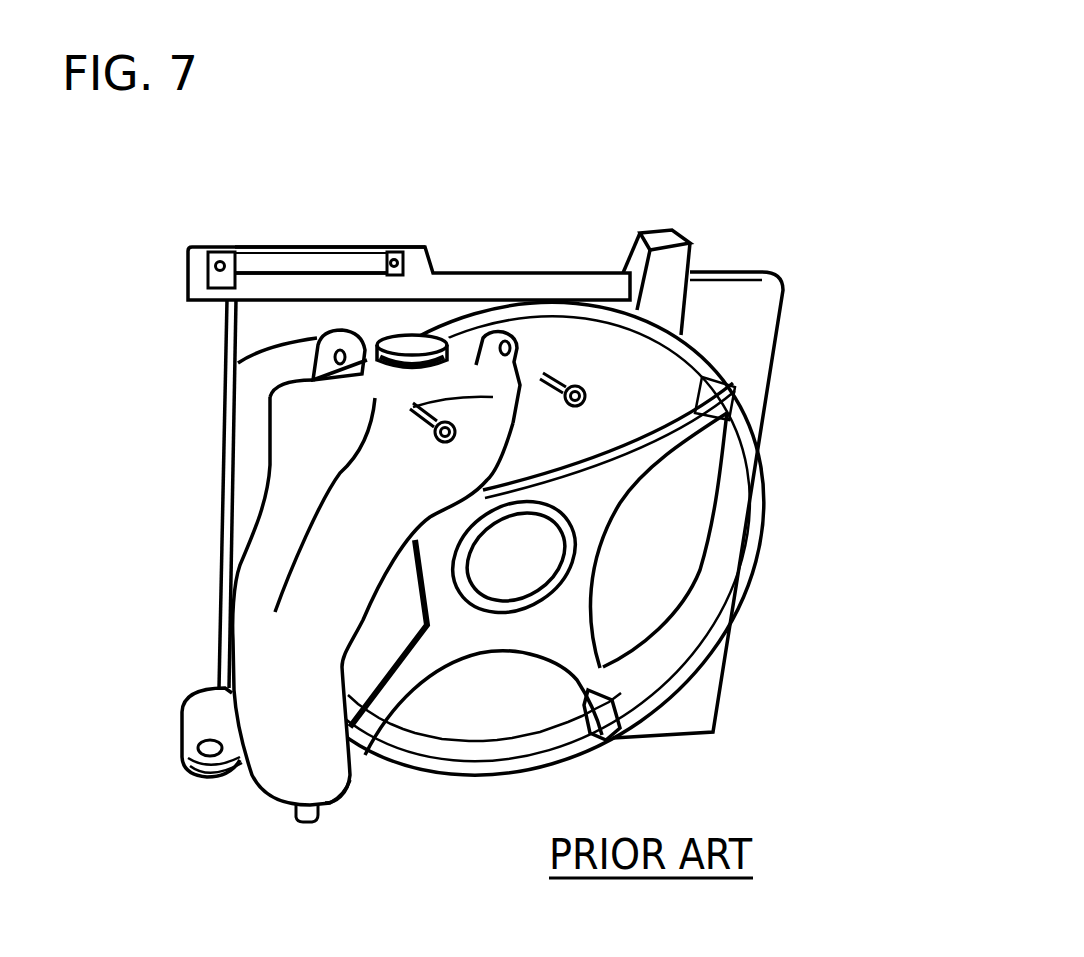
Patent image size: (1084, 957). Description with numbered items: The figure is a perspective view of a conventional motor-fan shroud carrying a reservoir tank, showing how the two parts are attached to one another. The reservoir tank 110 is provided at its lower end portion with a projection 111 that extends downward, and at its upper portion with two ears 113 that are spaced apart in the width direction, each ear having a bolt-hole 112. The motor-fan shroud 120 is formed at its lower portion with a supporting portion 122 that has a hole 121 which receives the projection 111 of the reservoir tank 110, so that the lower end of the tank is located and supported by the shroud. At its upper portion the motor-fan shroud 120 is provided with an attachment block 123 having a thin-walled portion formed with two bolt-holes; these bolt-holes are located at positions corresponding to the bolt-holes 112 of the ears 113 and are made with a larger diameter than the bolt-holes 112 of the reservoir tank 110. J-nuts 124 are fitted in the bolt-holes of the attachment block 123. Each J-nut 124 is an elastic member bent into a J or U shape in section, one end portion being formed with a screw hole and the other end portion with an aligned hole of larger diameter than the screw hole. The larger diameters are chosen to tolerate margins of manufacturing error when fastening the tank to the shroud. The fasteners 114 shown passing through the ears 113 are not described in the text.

The reservoir tank 110 is at (282, 498).
The projection 111 is at (323, 818).
The bolt-hole 112 is at (345, 378).
The ear 113 is at (477, 333).
The fastening bolts 114 is at (580, 383).
The motor-fan shroud 120 is at (780, 364).
The hole 121 is at (200, 742).
The supporting portion 122 is at (207, 778).
The attachment block 123 is at (303, 250).
The J-nut 124 is at (217, 252).